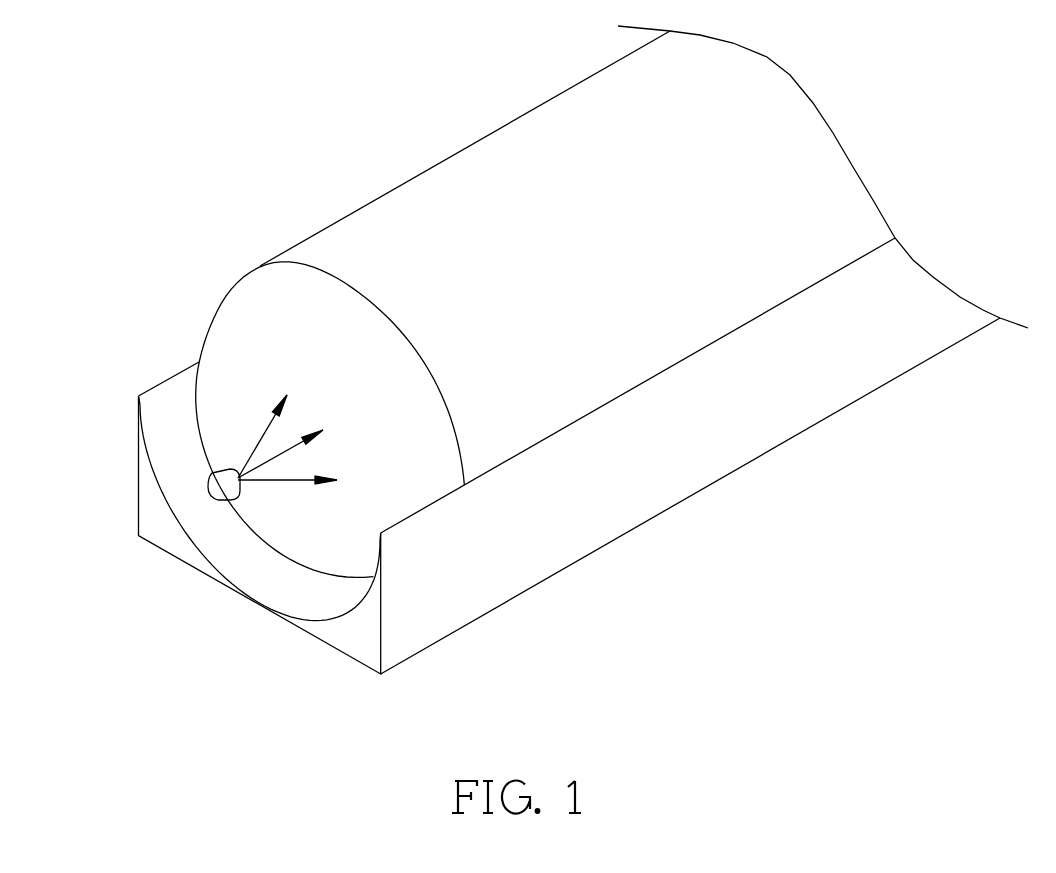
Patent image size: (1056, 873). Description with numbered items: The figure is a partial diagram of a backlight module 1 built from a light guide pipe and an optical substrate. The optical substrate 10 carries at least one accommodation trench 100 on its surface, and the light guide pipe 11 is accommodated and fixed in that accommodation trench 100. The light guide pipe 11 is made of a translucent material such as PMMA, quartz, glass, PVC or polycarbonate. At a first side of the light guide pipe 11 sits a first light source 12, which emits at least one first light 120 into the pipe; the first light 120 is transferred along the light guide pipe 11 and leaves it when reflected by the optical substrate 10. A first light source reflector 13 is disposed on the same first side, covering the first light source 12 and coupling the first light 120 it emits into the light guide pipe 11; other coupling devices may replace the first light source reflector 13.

The backlight module 1 is at (378, 58).
The optical substrate 10 is at (511, 456).
The light guide pipe 11 is at (579, 301).
The first light source 12 is at (208, 488).
The first light source reflector 13 is at (217, 328).
The accommodation trench 100 is at (177, 468).
The first light 120 is at (277, 398).